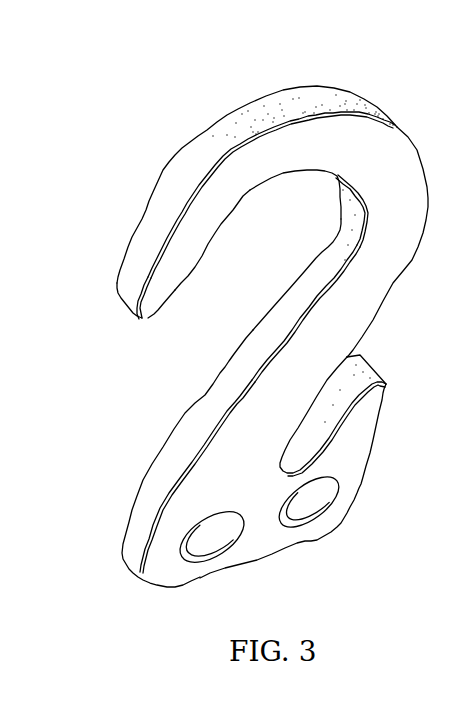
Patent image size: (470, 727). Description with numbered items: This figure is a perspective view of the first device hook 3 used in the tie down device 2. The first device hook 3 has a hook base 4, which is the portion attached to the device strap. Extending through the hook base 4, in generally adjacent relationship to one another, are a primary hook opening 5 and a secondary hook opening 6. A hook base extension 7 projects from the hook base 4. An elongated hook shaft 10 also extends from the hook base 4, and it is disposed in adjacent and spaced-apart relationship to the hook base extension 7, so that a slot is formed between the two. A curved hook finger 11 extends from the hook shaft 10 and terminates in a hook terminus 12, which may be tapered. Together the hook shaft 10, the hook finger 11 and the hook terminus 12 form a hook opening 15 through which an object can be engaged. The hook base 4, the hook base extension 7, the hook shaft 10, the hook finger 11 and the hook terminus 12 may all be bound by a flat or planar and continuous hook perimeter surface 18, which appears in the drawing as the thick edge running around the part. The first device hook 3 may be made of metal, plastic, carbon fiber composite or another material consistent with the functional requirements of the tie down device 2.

The tie down device 2 is at (257, 560).
The first device hook 3 is at (252, 308).
The hook base 4 is at (279, 488).
The primary hook opening 5 is at (182, 545).
The secondary hook opening 6 is at (293, 515).
The hook base extension 7 is at (360, 423).
The hook shaft 10 is at (347, 313).
The hook finger 11 is at (303, 155).
The hook terminus 12 is at (160, 298).
The hook opening 15 is at (197, 322).
The hook perimeter surface 18 is at (247, 123).